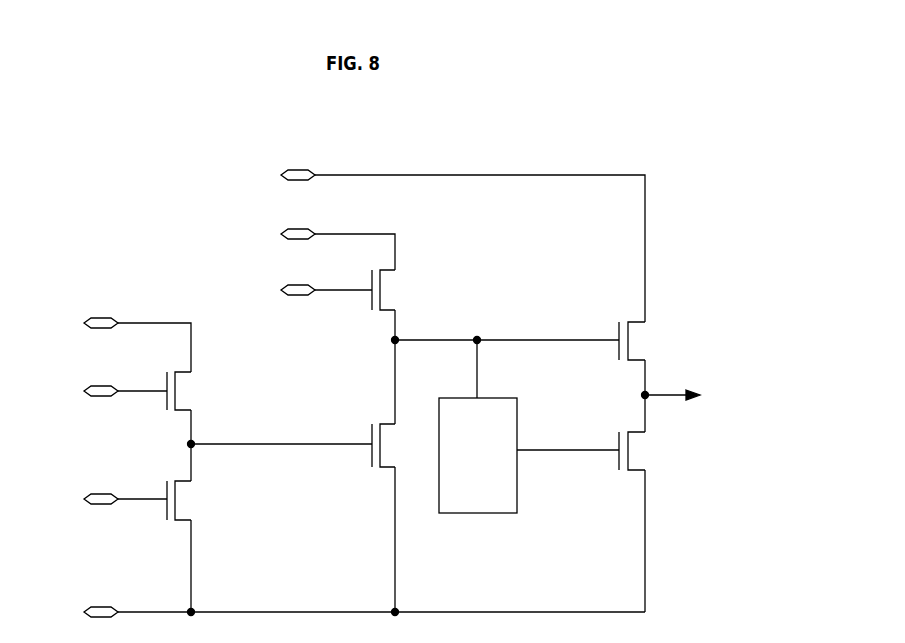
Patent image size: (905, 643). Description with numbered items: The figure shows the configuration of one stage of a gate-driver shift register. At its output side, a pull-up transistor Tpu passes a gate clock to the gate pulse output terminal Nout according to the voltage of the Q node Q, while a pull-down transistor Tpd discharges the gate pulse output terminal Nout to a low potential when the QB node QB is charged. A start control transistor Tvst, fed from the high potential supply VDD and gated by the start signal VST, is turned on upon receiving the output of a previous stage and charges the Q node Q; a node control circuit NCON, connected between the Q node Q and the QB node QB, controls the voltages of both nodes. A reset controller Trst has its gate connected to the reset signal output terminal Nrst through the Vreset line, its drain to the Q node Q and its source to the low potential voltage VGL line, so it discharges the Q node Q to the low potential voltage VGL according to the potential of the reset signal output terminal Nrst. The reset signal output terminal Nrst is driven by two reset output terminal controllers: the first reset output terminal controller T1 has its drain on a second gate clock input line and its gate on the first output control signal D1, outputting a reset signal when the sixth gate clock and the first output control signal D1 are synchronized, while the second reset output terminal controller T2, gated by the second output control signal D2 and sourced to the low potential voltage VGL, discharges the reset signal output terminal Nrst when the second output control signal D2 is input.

The high potential supply voltage input VDD is at (317, 246).
The start signal input VST is at (306, 290).
The first output control signal D1 is at (110, 391).
The second output control signal D2 is at (110, 499).
The low potential voltage VGL is at (343, 612).
The first reset output terminal controller T1 is at (191, 426).
The second reset output terminal controller T2 is at (191, 546).
The reset signal output terminal Nrst is at (167, 444).
The reset voltage line Vreset is at (281, 431).
The start control transistor Tvst is at (402, 347).
The reset controller Trst is at (401, 518).
The Q node Q is at (506, 356).
The node control circuit NCON is at (478, 455).
The QB node QB is at (568, 436).
The pull-up transistor Tpu is at (648, 377).
The pull-down transistor Tpd is at (648, 522).
The gate pulse output terminal Nout is at (621, 395).